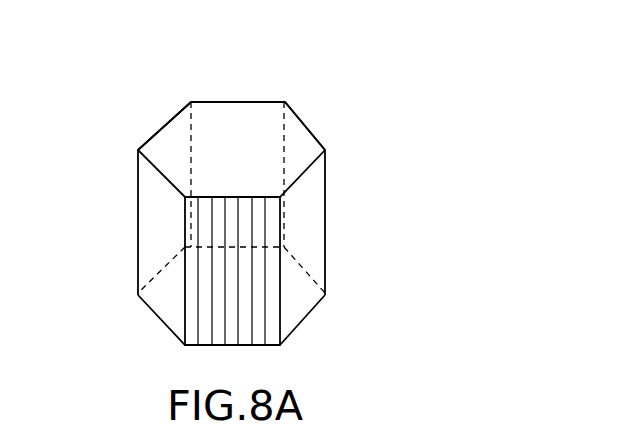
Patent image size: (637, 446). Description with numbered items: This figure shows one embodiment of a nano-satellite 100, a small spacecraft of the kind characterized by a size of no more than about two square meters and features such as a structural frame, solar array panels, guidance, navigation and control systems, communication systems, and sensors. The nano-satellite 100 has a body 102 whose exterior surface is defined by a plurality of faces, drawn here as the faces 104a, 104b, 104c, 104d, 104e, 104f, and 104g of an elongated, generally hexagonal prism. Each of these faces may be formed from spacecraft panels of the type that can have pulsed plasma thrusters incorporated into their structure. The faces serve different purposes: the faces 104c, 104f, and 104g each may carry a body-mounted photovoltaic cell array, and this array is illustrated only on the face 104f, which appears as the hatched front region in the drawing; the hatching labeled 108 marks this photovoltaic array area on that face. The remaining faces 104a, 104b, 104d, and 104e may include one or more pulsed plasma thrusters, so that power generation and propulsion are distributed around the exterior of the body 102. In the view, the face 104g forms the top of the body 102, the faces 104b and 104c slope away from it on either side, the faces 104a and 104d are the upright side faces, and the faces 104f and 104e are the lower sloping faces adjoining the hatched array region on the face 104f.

The nano-satellite 100 is at (265, 201).
The body 102 is at (325, 150).
The face 104a is at (155, 213).
The face 104b is at (161, 132).
The face 104c is at (253, 98).
The face 104d is at (302, 117).
The face 104e is at (312, 312).
The face 104f is at (192, 320).
The face 104g is at (220, 128).
The hatched front face 108 is at (256, 306).